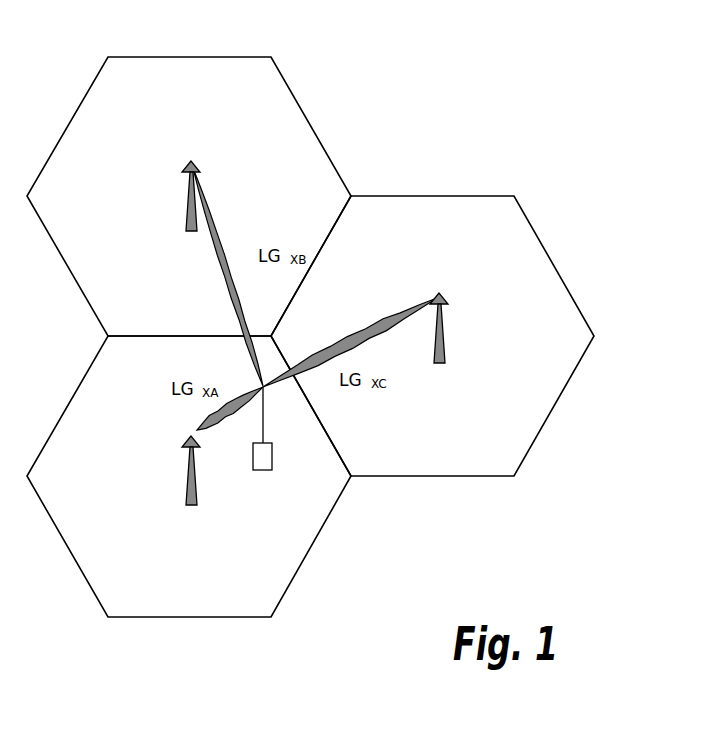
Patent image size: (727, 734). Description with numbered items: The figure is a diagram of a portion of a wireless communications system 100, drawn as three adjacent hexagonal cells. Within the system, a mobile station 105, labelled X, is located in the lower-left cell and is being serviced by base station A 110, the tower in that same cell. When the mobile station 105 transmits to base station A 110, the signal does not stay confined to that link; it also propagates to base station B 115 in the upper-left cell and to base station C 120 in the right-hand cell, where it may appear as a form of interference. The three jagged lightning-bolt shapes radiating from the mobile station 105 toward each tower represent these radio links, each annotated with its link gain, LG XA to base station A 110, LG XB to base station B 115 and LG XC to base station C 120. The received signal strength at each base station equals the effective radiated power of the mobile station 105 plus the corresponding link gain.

The wireless communications system 100 is at (548, 38).
The mobile station 105 is at (263, 470).
The base station A 110 is at (188, 497).
The base station B 115 is at (189, 212).
The base station C 120 is at (443, 341).